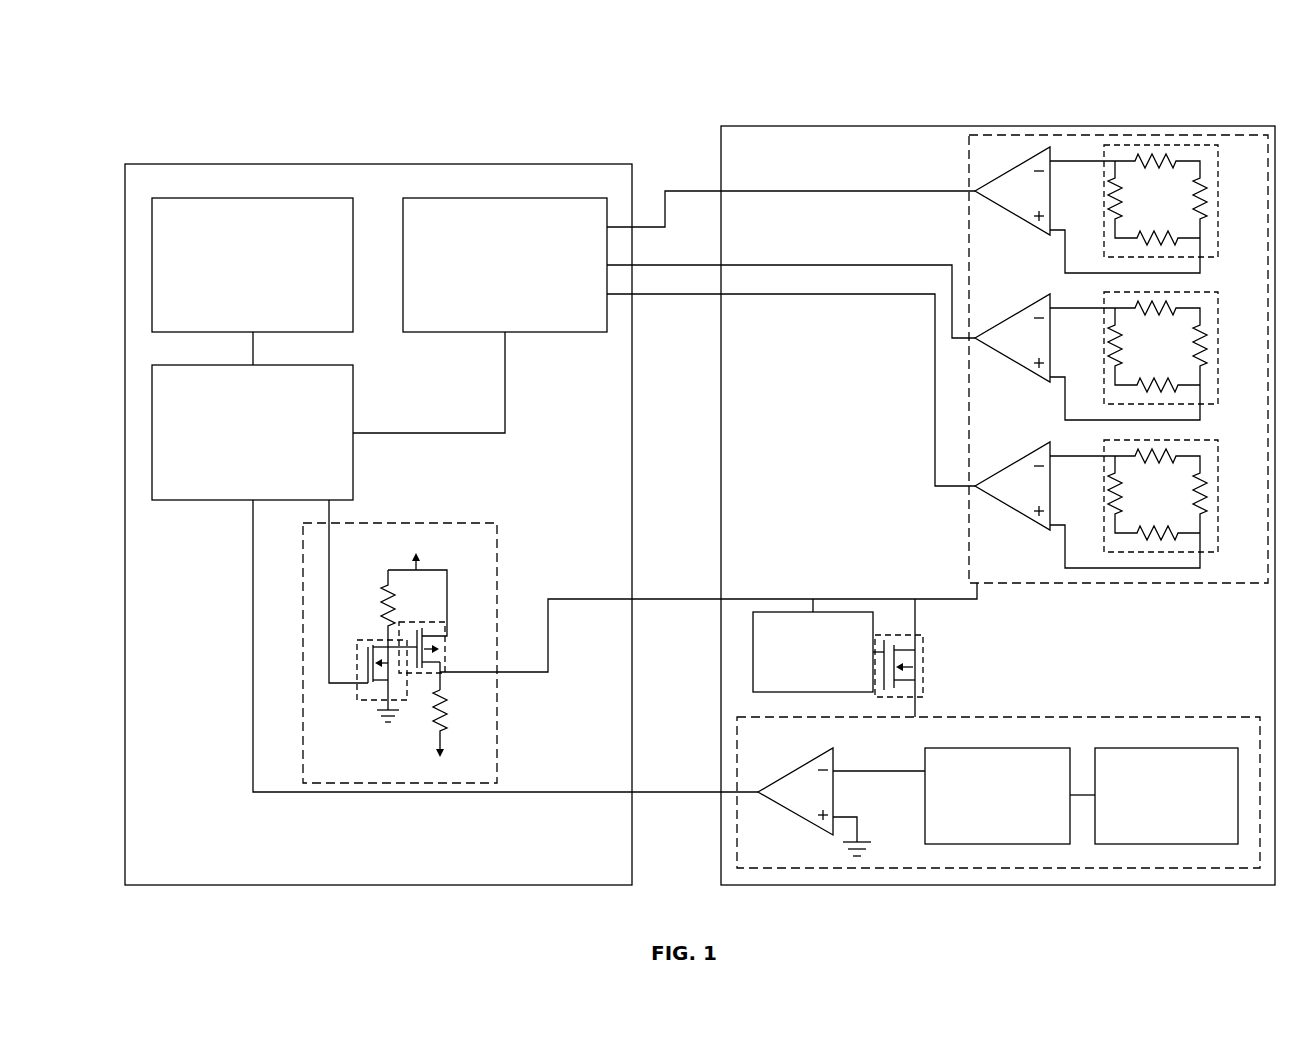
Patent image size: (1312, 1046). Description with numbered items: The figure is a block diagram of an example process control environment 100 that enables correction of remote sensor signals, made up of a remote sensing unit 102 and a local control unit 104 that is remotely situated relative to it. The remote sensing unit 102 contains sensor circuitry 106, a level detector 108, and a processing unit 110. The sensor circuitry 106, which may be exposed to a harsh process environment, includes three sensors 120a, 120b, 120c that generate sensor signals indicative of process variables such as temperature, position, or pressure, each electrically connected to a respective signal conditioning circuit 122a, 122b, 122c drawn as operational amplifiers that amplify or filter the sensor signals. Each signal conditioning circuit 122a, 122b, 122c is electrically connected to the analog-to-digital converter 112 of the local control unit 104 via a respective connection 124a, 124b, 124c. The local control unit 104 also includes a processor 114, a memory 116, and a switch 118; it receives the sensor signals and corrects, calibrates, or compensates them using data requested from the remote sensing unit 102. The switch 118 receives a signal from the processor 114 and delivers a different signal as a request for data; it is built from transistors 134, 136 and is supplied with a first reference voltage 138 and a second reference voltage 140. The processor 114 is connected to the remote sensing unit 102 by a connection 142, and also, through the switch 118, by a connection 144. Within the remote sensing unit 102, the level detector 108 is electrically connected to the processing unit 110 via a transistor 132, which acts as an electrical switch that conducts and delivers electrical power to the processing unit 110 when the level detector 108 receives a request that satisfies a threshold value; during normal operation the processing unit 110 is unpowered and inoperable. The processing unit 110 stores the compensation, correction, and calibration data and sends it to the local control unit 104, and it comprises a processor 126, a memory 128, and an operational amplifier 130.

The process control environment 100 is at (652, 120).
The remote sensing unit 102 is at (935, 127).
The local control unit 104 is at (383, 164).
The sensor circuitry 106 is at (1093, 583).
The level detector 108 is at (797, 683).
The processing unit 110 is at (1146, 717).
The analog-to-digital (A/D) converter 112 is at (489, 285).
The processor 114 is at (237, 453).
The memory 116 is at (237, 285).
The switch 118 is at (497, 523).
The sensor 120a is at (1267, 221).
The sensor 120b is at (1267, 368).
The sensor 120c is at (1267, 516).
The signal conditioning circuit 122a is at (1012, 214).
The signal conditioning circuit 122b is at (1012, 361).
The signal conditioning circuit 122c is at (1012, 509).
The connection 124a is at (837, 229).
The connection 124b is at (894, 246).
The connection 124c is at (834, 331).
The processor 126 is at (982, 816).
The memory 128 is at (1151, 816).
The operational amplifier 130 is at (790, 813).
The transistor 132 is at (923, 672).
The transistor 134 is at (357, 697).
The transistor 136 is at (484, 666).
The reference voltage V_REF,1 138 is at (460, 555).
The reference voltage V_REF,2 140 is at (479, 780).
The connection 142 is at (663, 794).
The connection 144 is at (675, 601).